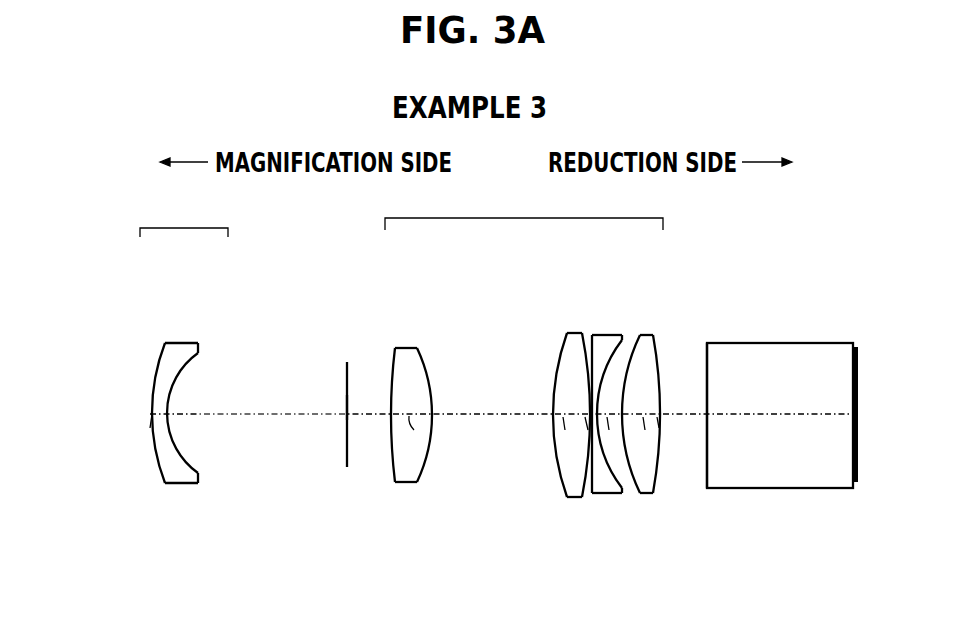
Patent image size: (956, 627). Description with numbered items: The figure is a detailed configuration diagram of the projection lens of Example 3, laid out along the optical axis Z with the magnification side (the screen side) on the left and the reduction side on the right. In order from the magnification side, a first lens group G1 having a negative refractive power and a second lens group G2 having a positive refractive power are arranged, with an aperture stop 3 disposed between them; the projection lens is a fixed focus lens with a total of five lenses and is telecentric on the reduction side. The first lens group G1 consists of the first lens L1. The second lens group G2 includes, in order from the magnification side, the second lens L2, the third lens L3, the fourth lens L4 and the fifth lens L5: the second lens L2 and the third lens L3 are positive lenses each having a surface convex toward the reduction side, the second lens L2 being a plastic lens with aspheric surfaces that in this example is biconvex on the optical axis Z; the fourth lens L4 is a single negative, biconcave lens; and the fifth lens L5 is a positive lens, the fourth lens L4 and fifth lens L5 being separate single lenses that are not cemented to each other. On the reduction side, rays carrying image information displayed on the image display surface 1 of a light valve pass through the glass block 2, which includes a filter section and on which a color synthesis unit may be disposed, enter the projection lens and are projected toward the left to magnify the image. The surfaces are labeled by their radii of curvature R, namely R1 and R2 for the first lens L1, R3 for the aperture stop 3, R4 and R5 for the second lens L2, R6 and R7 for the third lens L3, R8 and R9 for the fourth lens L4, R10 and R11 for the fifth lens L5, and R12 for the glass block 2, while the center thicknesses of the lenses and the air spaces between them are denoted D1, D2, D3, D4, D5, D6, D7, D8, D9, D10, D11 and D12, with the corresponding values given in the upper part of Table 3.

The image display surface 1 is at (870, 441).
The glass block 2 is at (782, 488).
The aperture stop 3 is at (347, 447).
The radius of curvature R is at (857, 345).
The optical axis Z is at (280, 416).
The first lens group G1 is at (166, 361).
The second lens group G2 is at (532, 375).
The first lens L1 is at (163, 433).
The second lens L2 is at (418, 427).
The third lens L3 is at (545, 419).
The fourth lens L4 is at (597, 407).
The fifth lens L5 is at (665, 406).
The radius of curvature of lens surface R1 is at (152, 414).
The radius of curvature of lens surface R2 is at (167, 413).
The radius of curvature of lens surface R3 is at (347, 405).
The radius of curvature of lens surface R4 is at (392, 403).
The radius of curvature of lens surface R5 is at (432, 415).
The radius of curvature of lens surface R6 is at (556, 378).
The radius of curvature of lens surface R7 is at (547, 517).
The radius of curvature of lens surface R8 is at (590, 388).
The radius of curvature of lens surface R9 is at (611, 372).
The radius of curvature of lens surface R10 is at (627, 362).
The radius of curvature of lens surface R11 is at (674, 406).
The radius of curvature of lens surface R12 is at (707, 370).
The center thickness D1 is at (150, 428).
The air space D2 is at (272, 432).
The air space D3 is at (369, 432).
The center thickness D4 is at (414, 430).
The air space D5 is at (467, 432).
The center thickness D6 is at (560, 430).
The air space D7 is at (583, 438).
The center thickness D8 is at (597, 430).
The air space D9 is at (600, 420).
The center thickness D10 is at (645, 430).
The air space D11 is at (680, 434).
The center thickness D12 is at (784, 435).